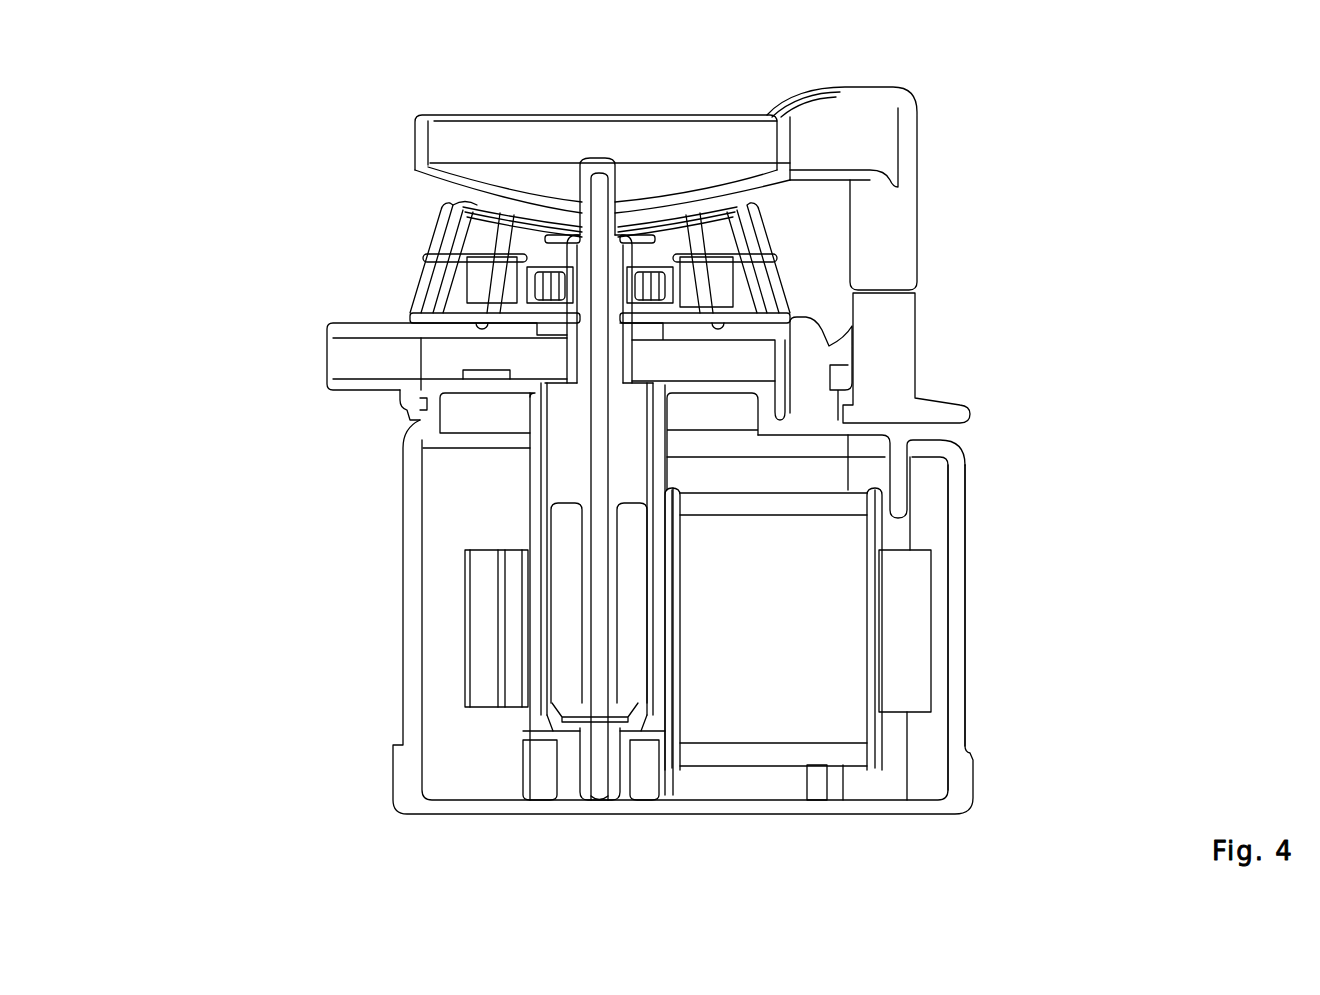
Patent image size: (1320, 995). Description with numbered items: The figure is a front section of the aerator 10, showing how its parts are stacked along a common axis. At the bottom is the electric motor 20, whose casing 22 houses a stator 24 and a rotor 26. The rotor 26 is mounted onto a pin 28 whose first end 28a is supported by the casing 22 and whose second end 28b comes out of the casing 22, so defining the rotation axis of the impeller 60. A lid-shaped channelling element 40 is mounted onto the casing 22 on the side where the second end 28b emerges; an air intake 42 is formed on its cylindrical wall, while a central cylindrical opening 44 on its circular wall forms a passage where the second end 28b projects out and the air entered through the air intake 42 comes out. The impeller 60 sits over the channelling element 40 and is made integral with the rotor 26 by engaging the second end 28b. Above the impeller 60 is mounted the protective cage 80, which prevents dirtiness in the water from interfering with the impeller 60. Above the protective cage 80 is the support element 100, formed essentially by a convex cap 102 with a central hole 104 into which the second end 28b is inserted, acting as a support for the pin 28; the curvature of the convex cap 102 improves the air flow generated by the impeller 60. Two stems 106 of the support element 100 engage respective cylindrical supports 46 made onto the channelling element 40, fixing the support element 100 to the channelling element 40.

The aerator 10 is at (1178, 147).
The electric motor 20 is at (968, 473).
The casing 22 is at (968, 555).
The stator 24 is at (492, 662).
The rotor 26 is at (566, 561).
The pin 28 is at (597, 477).
The first end 28a is at (593, 731).
The second end 28b is at (436, 238).
The channelling element 40 is at (532, 359).
The air intake 42 is at (330, 350).
The cylindrical opening 44 is at (535, 273).
The cylindrical support 46 is at (918, 327).
The impeller 60 is at (740, 268).
The protective cage 80 is at (772, 218).
The support element 100 is at (413, 135).
The convex cap 102 is at (432, 198).
The hole 104 is at (600, 185).
The stems 106 is at (920, 172).